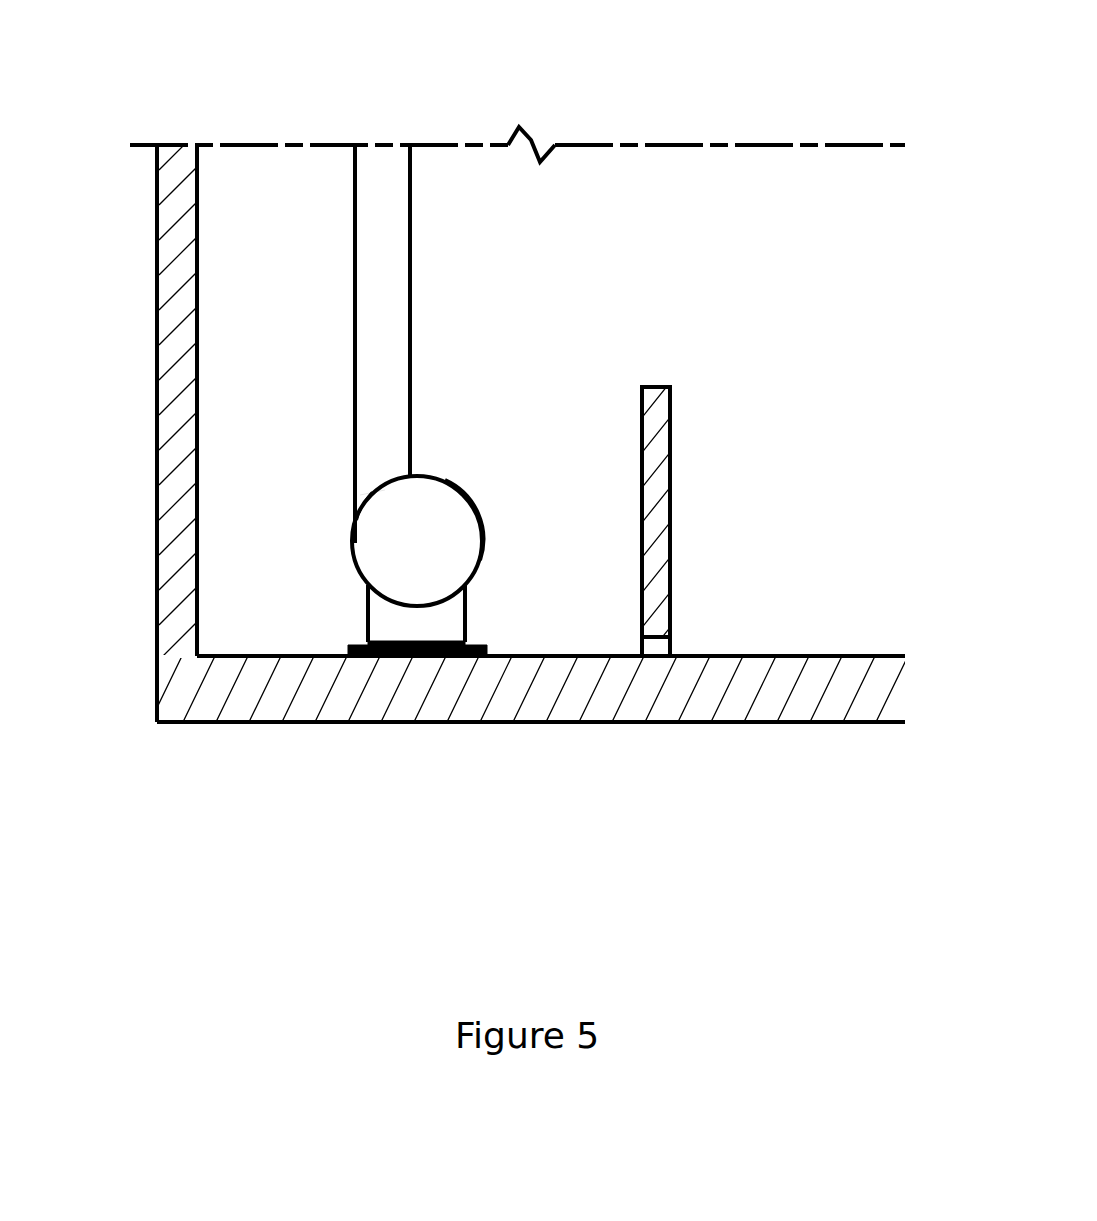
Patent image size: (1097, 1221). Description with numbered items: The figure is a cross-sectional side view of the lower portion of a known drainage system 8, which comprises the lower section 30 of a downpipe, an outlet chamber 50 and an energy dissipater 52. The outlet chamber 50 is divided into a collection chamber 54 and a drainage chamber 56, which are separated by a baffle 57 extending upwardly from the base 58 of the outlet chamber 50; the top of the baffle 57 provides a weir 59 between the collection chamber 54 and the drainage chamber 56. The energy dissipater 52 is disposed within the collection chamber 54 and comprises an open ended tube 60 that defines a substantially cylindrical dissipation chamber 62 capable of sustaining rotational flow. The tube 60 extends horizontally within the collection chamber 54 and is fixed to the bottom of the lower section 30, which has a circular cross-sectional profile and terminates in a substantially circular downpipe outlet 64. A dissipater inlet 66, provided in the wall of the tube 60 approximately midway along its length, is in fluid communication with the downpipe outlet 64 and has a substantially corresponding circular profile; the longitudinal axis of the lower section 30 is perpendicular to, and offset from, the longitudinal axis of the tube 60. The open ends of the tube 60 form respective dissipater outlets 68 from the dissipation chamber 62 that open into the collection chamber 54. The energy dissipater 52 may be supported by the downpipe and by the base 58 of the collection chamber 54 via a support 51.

The drainage system 8 is at (900, 69).
The lower section 30 is at (410, 178).
The outlet chamber 50 is at (166, 274).
The support 51 is at (466, 625).
The energy dissipater 52 is at (464, 482).
The collection chamber 54 is at (587, 525).
The drainage chamber 56 is at (837, 525).
The baffle 57 is at (653, 567).
The base 58 is at (812, 668).
The weir 59 is at (662, 387).
The open ended tube 60 is at (481, 555).
The dissipation chamber 62 is at (440, 559).
The downpipe outlet 64 is at (368, 500).
The dissipater inlet 66 is at (385, 489).
The dissipater outlets 68 is at (468, 598).